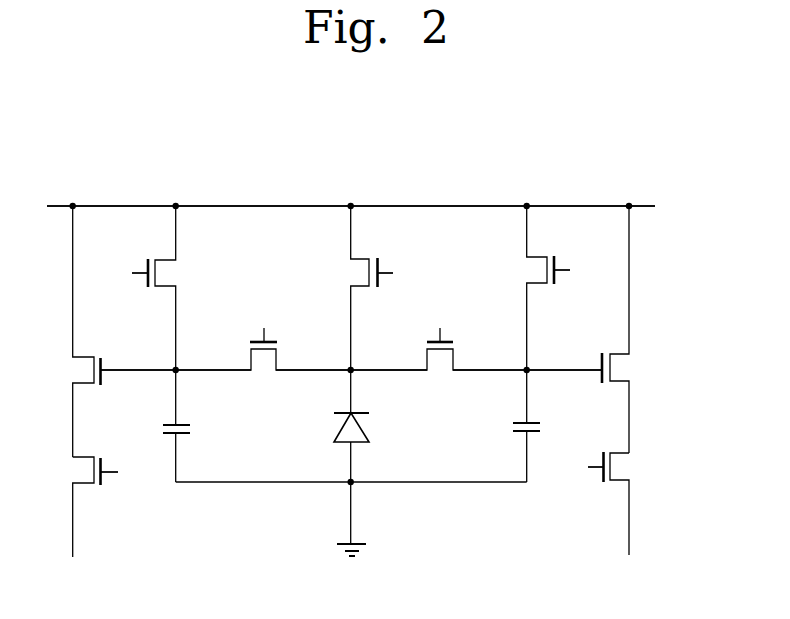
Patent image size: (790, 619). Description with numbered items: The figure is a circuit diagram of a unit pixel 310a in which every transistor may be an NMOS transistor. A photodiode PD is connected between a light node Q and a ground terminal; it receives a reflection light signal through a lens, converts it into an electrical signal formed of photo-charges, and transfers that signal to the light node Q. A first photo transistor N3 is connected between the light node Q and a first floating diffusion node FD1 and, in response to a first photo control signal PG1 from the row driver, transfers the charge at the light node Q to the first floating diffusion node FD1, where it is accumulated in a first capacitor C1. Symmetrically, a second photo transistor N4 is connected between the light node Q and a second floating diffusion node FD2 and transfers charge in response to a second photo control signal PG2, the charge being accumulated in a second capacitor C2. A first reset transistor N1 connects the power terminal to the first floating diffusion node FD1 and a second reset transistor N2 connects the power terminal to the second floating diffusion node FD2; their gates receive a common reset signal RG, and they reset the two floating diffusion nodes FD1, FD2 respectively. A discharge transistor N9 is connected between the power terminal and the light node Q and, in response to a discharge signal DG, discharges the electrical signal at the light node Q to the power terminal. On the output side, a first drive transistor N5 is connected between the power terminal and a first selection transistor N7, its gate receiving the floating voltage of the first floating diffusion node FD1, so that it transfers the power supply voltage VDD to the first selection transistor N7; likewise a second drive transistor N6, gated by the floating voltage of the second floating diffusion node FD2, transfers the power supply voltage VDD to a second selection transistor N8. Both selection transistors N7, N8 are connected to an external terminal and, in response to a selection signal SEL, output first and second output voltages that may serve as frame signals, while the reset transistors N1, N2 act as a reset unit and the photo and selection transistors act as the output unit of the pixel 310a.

The pixel 310a is at (616, 124).
The power supply voltage VDD is at (351, 196).
The first reset transistor N1 is at (166, 288).
The second reset transistor N2 is at (535, 288).
The first photo transistor N3 is at (263, 369).
The second photo transistor N4 is at (439, 369).
The first drive transistor N5 is at (112, 331).
The second drive transistor N6 is at (590, 329).
The first selection transistor N7 is at (83, 507).
The second selection transistor N8 is at (621, 503).
The discharge transistor N9 is at (360, 288).
The reset signal RG is at (350, 272).
The discharge signal DG is at (399, 273).
The first photo control signal PG1 is at (261, 324).
The second photo control signal PG2 is at (440, 324).
The selection signal SEL is at (352, 470).
The first floating diffusion node FD1 is at (176, 362).
The second floating diffusion node FD2 is at (527, 361).
The light node Q is at (351, 361).
The photodiode PD is at (337, 426).
The first capacitor C1 is at (188, 426).
The second capacitor C2 is at (515, 426).